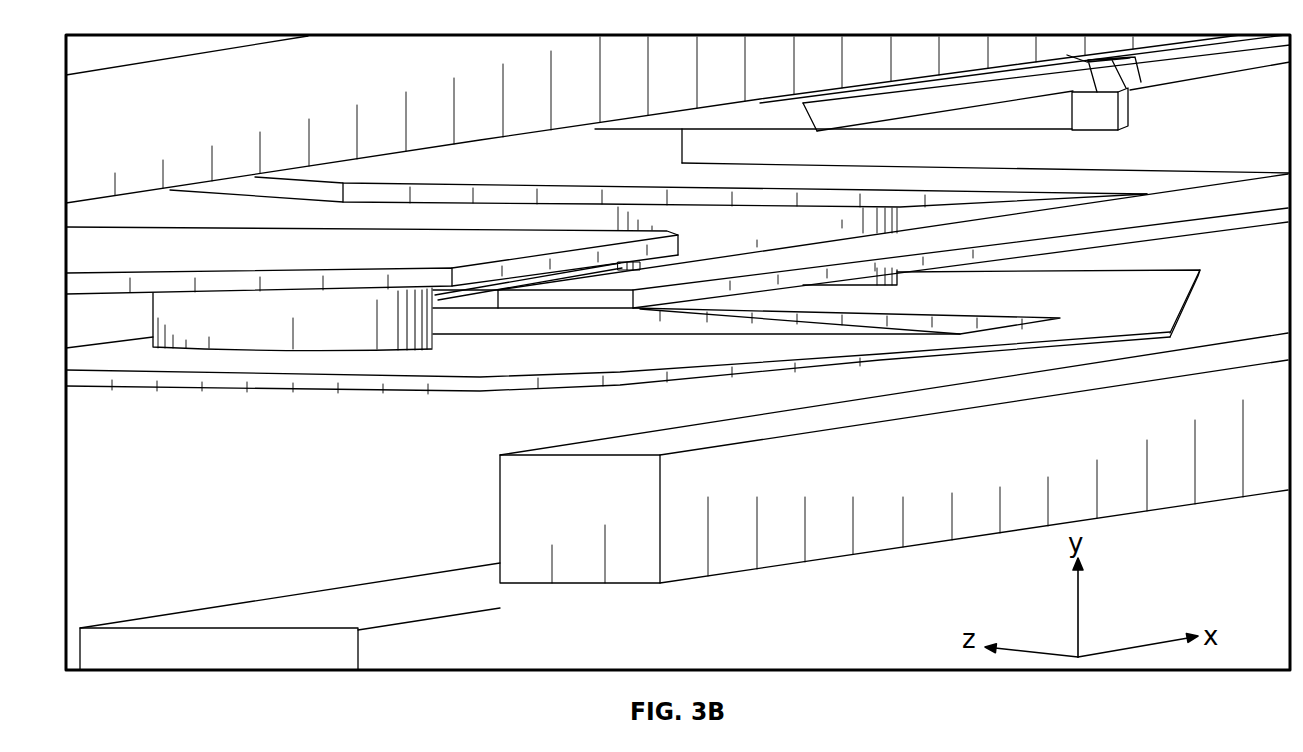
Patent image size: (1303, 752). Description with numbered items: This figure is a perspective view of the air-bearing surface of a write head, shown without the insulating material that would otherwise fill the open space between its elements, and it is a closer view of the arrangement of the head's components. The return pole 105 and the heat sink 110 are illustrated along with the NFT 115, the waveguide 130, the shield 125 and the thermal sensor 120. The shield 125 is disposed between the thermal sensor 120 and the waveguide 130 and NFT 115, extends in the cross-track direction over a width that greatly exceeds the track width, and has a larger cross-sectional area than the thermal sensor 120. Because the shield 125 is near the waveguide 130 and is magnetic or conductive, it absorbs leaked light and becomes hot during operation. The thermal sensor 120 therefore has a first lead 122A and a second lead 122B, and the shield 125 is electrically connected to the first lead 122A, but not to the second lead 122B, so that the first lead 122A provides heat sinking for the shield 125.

The return pole 105 is at (573, 535).
The heat sink 110 is at (287, 109).
The NFT 115 is at (699, 117).
The thermal sensor 120 is at (570, 353).
The first lead 122A is at (802, 177).
The second lead 122B is at (230, 247).
The shield 125 is at (1183, 222).
The waveguide 130 is at (1123, 104).